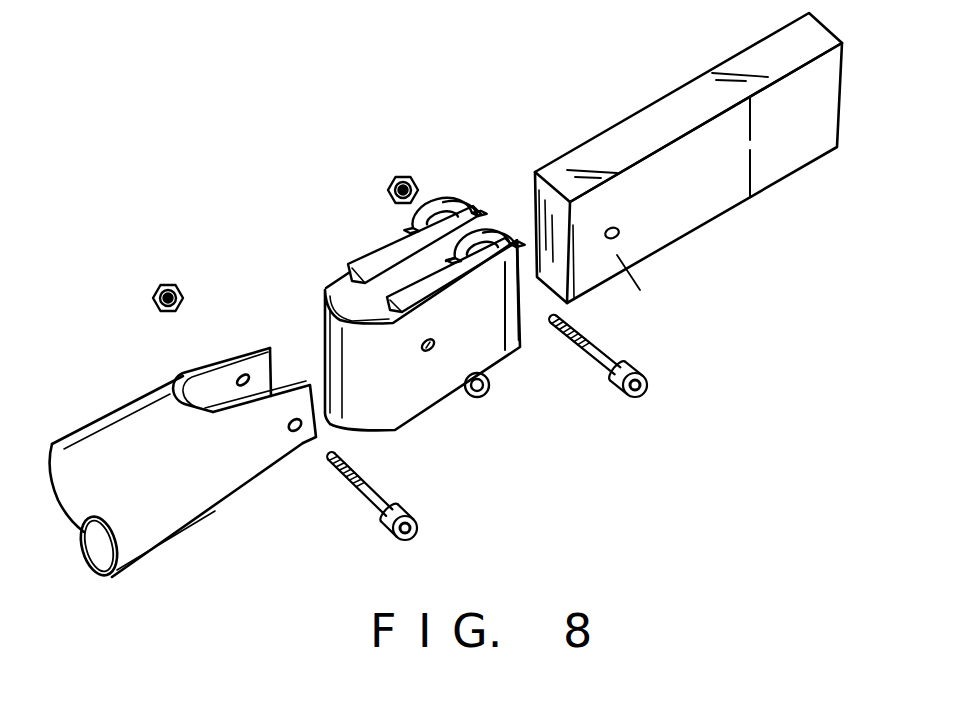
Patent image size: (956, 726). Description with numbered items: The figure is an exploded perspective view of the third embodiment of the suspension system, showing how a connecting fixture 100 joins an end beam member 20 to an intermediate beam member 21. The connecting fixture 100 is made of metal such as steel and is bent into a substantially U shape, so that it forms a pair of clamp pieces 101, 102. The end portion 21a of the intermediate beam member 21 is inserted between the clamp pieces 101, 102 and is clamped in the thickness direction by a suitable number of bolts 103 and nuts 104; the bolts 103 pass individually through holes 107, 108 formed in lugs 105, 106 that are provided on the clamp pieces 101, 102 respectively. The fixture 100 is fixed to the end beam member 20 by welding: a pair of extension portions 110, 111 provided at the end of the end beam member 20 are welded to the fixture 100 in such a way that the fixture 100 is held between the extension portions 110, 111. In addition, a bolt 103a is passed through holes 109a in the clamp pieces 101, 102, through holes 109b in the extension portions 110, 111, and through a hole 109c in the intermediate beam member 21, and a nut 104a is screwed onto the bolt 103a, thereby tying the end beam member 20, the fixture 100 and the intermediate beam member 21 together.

The end beam member 20 is at (163, 407).
The intermediate beam member 21 is at (650, 110).
The end portion 21a is at (617, 253).
The connecting fixture 100 is at (507, 364).
The clamp piece 101 is at (510, 308).
The clamp piece 102 is at (480, 222).
The bolt 103 is at (607, 362).
The bolt 103a is at (385, 500).
The nut 104 is at (410, 176).
The nut 104a is at (174, 289).
The lug 105 is at (490, 228).
The lug 106 is at (442, 198).
The hole 107 is at (490, 262).
The hole 108 is at (403, 233).
The hole 109a is at (426, 351).
The hole 109b is at (247, 377).
The hole 109c is at (619, 230).
The extension portion 110 is at (243, 478).
The extension portion 111 is at (213, 377).